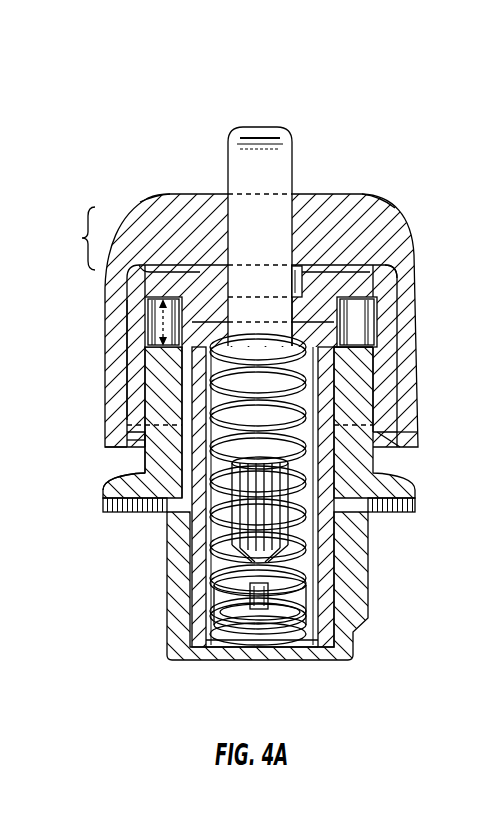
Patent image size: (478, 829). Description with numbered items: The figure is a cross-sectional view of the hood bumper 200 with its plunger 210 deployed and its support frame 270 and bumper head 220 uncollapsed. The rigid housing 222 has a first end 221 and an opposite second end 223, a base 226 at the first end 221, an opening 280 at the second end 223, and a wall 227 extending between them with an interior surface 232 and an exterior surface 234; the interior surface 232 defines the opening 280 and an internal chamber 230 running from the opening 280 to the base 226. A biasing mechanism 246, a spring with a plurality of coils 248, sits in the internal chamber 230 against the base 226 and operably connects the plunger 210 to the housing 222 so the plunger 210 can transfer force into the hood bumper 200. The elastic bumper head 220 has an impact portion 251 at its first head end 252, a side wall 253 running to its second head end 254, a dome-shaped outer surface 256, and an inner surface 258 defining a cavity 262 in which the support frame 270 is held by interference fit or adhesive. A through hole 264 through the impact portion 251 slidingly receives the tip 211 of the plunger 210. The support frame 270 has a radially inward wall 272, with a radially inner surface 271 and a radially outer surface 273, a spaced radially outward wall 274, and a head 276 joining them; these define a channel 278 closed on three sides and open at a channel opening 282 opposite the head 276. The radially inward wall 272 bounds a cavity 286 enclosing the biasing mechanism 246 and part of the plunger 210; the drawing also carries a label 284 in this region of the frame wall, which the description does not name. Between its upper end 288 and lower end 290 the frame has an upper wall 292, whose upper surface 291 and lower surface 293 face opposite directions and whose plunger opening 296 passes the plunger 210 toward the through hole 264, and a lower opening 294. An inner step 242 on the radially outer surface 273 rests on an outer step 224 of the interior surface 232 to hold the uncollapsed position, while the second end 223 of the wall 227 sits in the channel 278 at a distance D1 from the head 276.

The hood bumper 200 is at (62, 56).
The plunger 210 is at (224, 103).
The tip 211 is at (268, 128).
The bumper head 220 is at (386, 160).
The first end 221 is at (210, 660).
The housing 222 is at (395, 432).
The second end 223 is at (145, 330).
The outer step 224 is at (112, 497).
The base 226 is at (295, 650).
The wall 227 is at (436, 361).
The internal chamber 230 is at (178, 686).
The interior surface 232 is at (143, 395).
The exterior surface 234 is at (140, 372).
The inner step 242 is at (112, 530).
The biasing mechanism 246 is at (318, 588).
The coils 248 is at (305, 551).
The impact portion 251 is at (236, 331).
The first head end 252 is at (295, 197).
The side wall 253 is at (138, 352).
The second head end 254 is at (108, 450).
The outer surface 256 is at (154, 205).
The inner surface 258 is at (112, 444).
The cavity 262 is at (427, 465).
The through hole 264 is at (254, 192).
The support frame 270 is at (421, 220).
The radially inner surface 271 is at (144, 611).
The radially inward wall 272 is at (378, 402).
The radially outer surface 273 is at (372, 347).
The radially outward wall 274 is at (405, 298).
The head 276 is at (395, 222).
The channel 278 is at (78, 268).
The opening 280 is at (385, 316).
The channel opening 282 is at (130, 420).
The sleeve wall 284 is at (180, 577).
The cavity 286 is at (142, 549).
The upper end 288 is at (335, 177).
The lower end 290 is at (355, 620).
The upper surface 291 is at (210, 264).
The upper wall 292 is at (322, 306).
The lower surface 293 is at (290, 325).
The lower opening 294 is at (142, 648).
The plunger opening 296 is at (258, 297).
The distance D1 is at (156, 320).